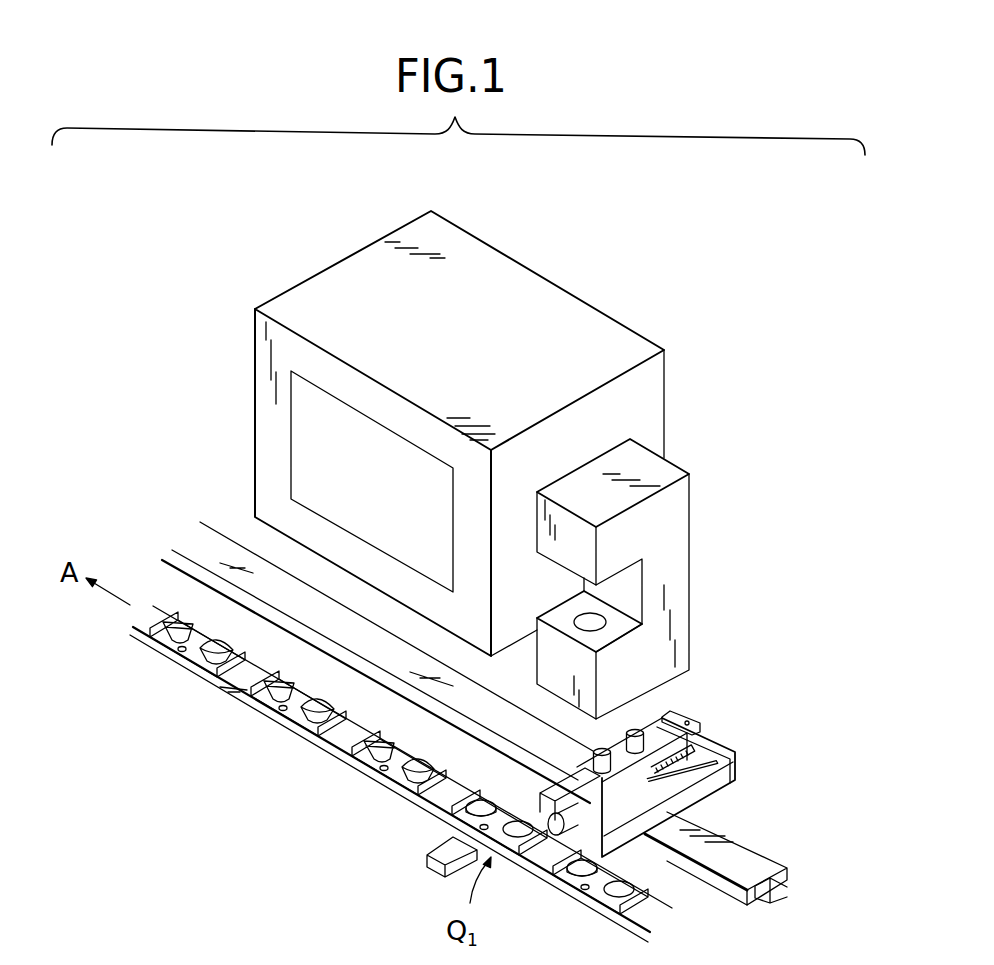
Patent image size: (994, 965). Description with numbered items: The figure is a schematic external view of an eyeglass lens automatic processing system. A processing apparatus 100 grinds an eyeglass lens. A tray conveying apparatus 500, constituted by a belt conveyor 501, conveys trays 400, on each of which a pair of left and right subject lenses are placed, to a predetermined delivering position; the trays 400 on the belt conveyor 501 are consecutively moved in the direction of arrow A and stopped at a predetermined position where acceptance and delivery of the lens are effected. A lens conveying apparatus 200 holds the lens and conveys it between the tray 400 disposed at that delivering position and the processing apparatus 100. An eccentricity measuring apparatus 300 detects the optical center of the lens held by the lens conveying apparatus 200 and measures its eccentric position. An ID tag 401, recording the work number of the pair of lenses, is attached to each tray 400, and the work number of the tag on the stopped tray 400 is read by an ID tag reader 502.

The processing apparatus 100 is at (621, 338).
The lens conveying apparatus 200 is at (776, 791).
The eccentricity measuring apparatus 300 is at (684, 537).
The tray 400 is at (210, 663).
The ID tag 401 is at (467, 825).
The tray conveying apparatus 500 is at (248, 757).
The belt conveyor 501 is at (642, 917).
The ID tag reader 502 is at (432, 868).